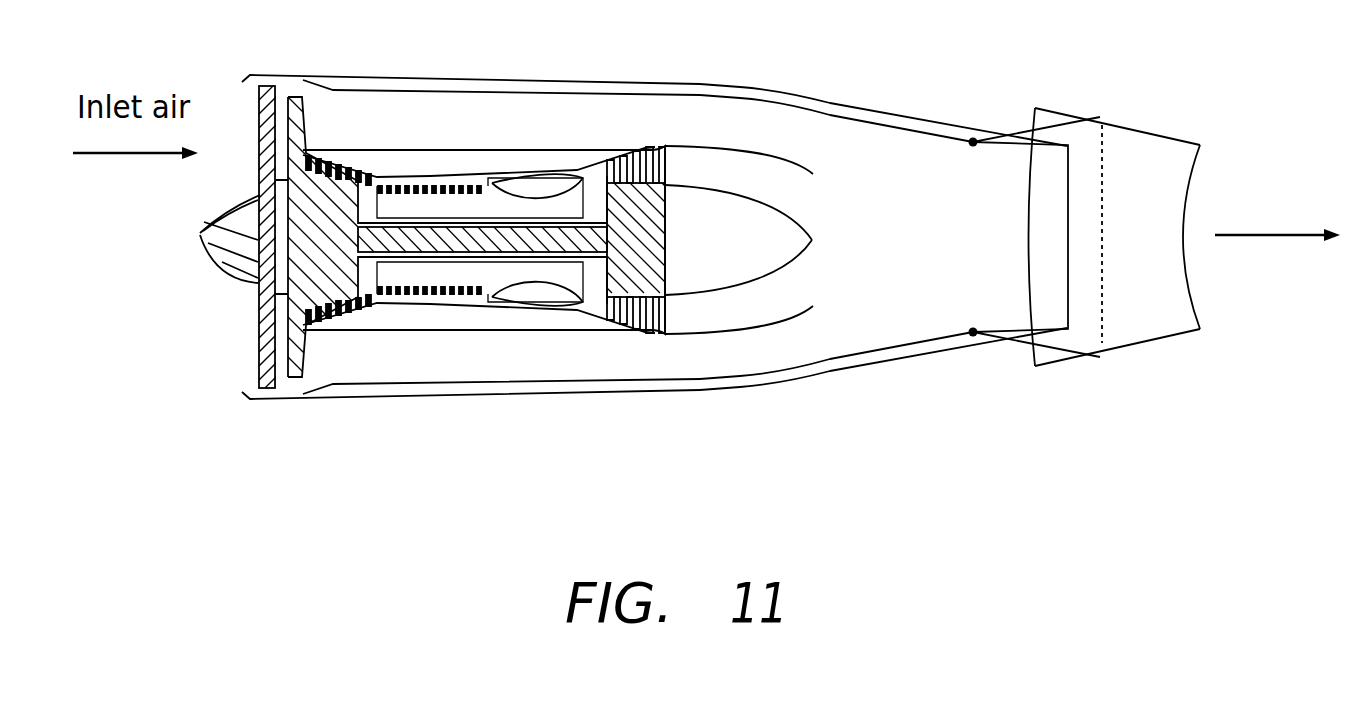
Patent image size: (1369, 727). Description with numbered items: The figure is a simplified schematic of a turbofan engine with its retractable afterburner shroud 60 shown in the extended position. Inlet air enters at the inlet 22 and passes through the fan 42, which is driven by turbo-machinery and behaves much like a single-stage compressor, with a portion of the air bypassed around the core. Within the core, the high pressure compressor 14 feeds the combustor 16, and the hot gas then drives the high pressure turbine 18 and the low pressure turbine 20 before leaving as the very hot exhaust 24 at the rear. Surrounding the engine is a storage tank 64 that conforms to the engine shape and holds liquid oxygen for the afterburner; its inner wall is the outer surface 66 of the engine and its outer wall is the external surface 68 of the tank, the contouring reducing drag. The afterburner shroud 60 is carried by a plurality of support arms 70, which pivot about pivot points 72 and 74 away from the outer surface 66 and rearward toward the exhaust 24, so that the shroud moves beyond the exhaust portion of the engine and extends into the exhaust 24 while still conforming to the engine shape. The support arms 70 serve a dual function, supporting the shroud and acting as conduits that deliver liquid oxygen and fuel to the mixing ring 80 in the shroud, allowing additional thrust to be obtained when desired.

The high pressure compressor 14 is at (420, 302).
The combustor 16 is at (542, 182).
The high pressure turbine 18 is at (578, 305).
The low pressure turbine 20 is at (635, 150).
The inlet 22 is at (160, 325).
The exhaust 24 is at (1242, 148).
The fan 42 is at (258, 352).
The retractable afterburner shroud 60 is at (1133, 352).
The storage tank 64 is at (358, 81).
The outer surface 66 is at (340, 387).
The external surface 68 is at (790, 88).
The support arms 70 is at (1007, 134).
The pivot point 72 is at (971, 143).
The pivot point 74 is at (971, 331).
The mixing ring 80 is at (1137, 157).